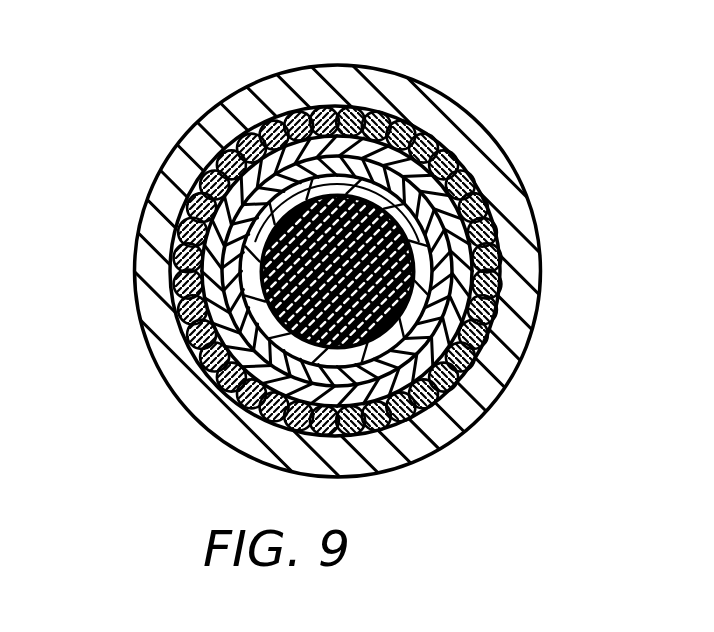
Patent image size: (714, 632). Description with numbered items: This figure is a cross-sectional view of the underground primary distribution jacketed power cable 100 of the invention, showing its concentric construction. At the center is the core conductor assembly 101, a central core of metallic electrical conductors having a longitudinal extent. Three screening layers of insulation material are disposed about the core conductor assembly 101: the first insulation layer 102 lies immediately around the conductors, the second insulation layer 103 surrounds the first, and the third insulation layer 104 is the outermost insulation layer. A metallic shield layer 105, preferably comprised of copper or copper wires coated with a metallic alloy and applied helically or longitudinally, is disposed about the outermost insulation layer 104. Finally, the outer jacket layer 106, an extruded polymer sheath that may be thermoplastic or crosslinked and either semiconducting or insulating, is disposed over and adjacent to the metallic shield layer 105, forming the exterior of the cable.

The power cable 100 is at (172, 86).
The core conductor assembly 101 is at (264, 312).
The first insulation layer 102 is at (444, 427).
The second insulation layer 103 is at (427, 332).
The third insulation layer 104 is at (458, 286).
The metallic shield layer 105 is at (467, 173).
The outer jacket layer 106 is at (396, 86).